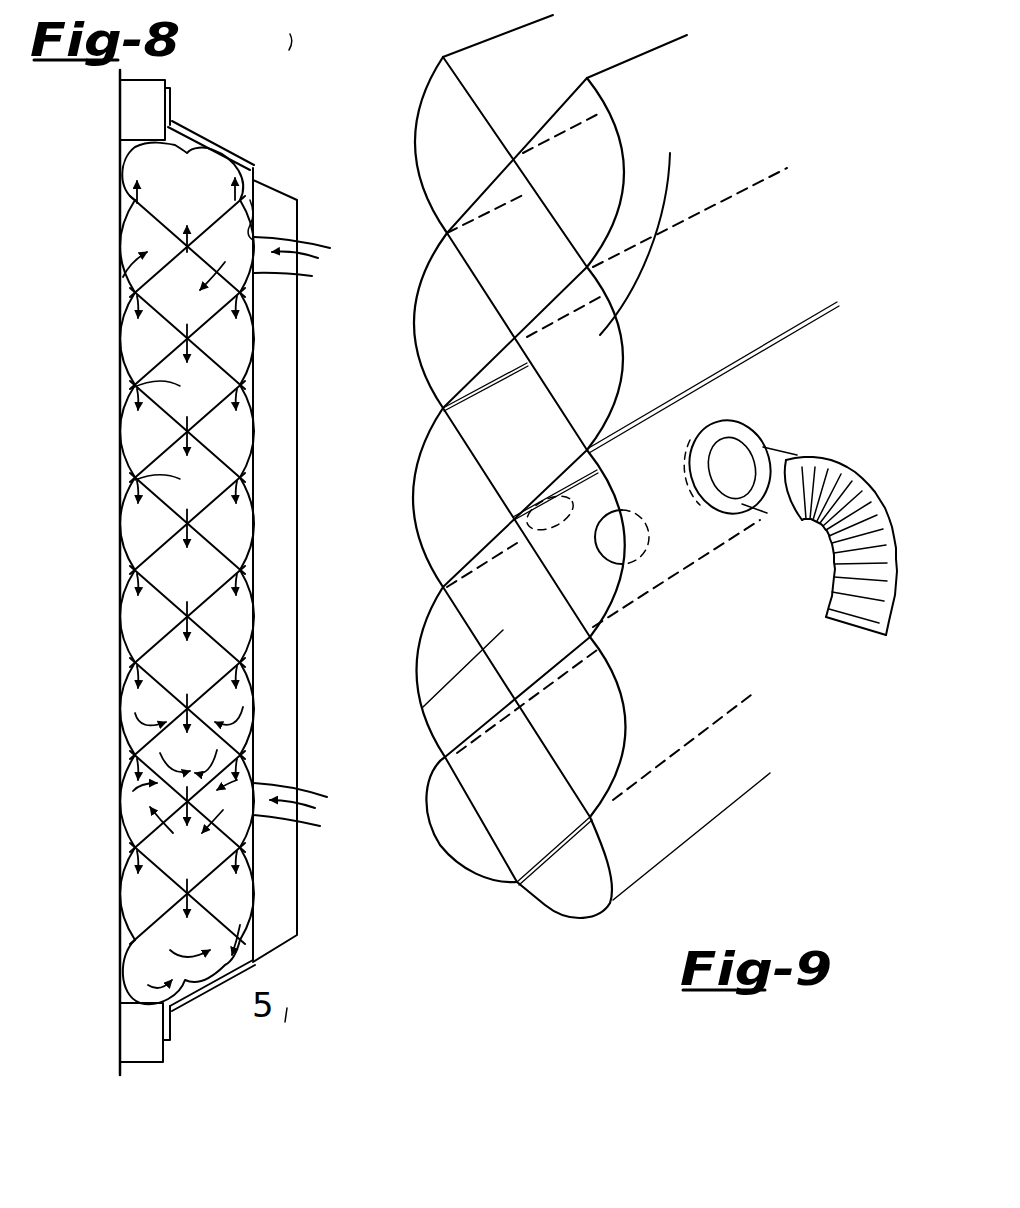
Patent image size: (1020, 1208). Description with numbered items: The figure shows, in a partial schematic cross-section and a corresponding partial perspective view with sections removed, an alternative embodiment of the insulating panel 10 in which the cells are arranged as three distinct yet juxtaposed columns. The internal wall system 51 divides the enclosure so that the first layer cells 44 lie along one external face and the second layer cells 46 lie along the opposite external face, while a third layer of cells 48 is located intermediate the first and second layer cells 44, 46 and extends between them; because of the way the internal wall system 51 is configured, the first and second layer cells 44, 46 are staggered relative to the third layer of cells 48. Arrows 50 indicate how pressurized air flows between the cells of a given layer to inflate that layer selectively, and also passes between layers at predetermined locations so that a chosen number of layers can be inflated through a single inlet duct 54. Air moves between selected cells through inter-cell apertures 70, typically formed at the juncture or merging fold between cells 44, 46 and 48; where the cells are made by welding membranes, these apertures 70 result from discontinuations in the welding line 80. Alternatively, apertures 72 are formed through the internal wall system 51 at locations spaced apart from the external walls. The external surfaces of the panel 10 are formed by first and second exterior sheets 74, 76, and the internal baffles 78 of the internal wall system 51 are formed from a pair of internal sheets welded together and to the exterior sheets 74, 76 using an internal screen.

In FIG. 8, the insulating panel 10 is at (208, 572).
In FIG. 8, the first layer cells 44 is at (134, 350).
In FIG. 9, the first layer cells 44 is at (445, 275).
In FIG. 8, the second layer cells 46 is at (233, 433).
In FIG. 9, the second layer cells 46 is at (587, 183).
In FIG. 8, the third layer of cells 48 is at (128, 482).
In FIG. 9, the third layer of cells 48 is at (470, 773).
In FIG. 8, the arrows 50 is at (250, 632).
In FIG. 8, the internal wall system 51 is at (207, 172).
In FIG. 9, the inlet duct 54 is at (823, 470).
In FIG. 9, the inter-cell apertures 70 is at (575, 310).
In FIG. 9, the inter-cell apertures 72 is at (547, 513).
In FIG. 9, the first exterior sheet 74 is at (427, 373).
In FIG. 9, the second exterior sheet 76 is at (625, 350).
In FIG. 9, the internal baffles 78 is at (547, 760).
In FIG. 9, the welding line 80 is at (512, 206).